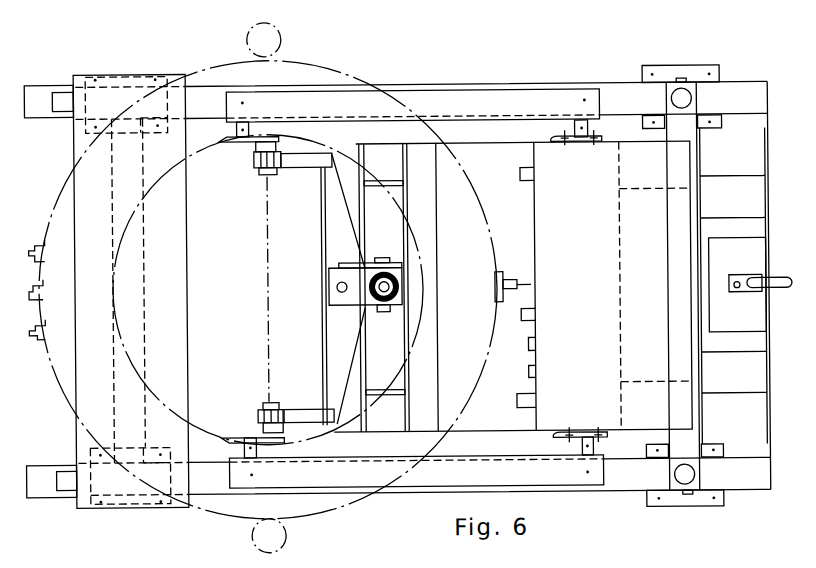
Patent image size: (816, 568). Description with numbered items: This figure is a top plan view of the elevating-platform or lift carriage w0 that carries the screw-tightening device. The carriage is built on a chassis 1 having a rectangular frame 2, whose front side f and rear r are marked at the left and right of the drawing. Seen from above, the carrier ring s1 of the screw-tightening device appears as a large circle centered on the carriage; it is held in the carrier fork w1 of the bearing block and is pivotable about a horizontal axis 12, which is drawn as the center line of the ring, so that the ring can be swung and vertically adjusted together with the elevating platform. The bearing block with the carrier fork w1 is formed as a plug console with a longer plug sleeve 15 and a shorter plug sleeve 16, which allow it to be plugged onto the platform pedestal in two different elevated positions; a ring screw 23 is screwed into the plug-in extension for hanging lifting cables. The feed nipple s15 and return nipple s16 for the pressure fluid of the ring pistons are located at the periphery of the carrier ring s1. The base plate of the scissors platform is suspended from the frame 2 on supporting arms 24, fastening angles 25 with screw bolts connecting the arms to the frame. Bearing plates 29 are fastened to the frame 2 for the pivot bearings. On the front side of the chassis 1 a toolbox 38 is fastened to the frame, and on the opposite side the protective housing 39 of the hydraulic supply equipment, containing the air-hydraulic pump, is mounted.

The chassis 1 is at (779, 434).
The rectangular frame 2 is at (624, 84).
The horizontal axis 12 is at (268, 218).
The longer plug sleeve 15 is at (337, 273).
The shorter plug sleeve 16 is at (400, 284).
The ring screw 23 is at (262, 172).
The supporting arms 24 is at (591, 142).
The fastening angles 25 is at (561, 142).
The bearing plates 29 is at (722, 69).
The toolbox 38 is at (125, 74).
The protective housing 39 is at (676, 165).
The carrier ring s1 is at (330, 61).
The feed nipple s15 is at (45, 339).
The return nipple s16 is at (47, 239).
The lift carriage w0 is at (507, 84).
The carrier fork w1 is at (340, 360).
The front side f is at (21, 157).
The rear r is at (784, 152).